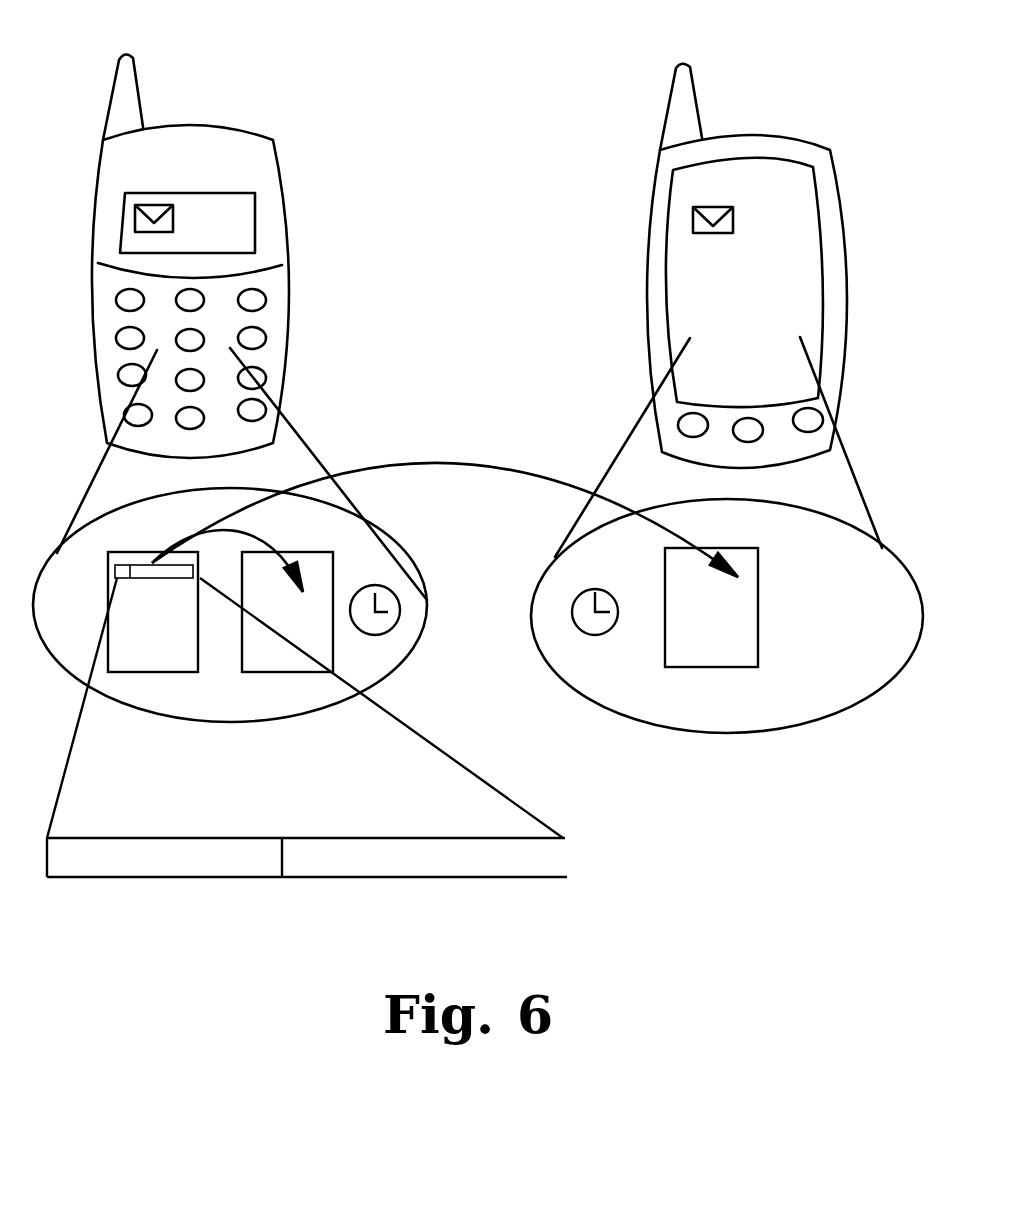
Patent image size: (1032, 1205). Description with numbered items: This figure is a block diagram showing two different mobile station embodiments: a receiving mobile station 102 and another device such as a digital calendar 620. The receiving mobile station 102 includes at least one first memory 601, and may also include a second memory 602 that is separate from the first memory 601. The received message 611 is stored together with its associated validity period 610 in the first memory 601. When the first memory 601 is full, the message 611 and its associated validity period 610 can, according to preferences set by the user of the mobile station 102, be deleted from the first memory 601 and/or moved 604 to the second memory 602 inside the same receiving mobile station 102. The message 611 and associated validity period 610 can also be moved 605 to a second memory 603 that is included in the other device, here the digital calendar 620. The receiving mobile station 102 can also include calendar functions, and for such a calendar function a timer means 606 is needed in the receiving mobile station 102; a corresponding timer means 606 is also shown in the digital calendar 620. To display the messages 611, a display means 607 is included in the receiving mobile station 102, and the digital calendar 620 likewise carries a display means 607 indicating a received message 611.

The receiving mobile station 102 is at (293, 290).
The digital calendar 620 is at (647, 290).
The display means 607 is at (233, 193).
The first memory 601 is at (190, 673).
The second memory 602 is at (310, 672).
The second memory 603 is at (758, 589).
The moving of message to second memory 604 is at (246, 532).
The moving of message to another device 605 is at (500, 464).
The timer means 606 is at (575, 598).
The validity period 610 is at (202, 878).
The message 611 is at (453, 878).